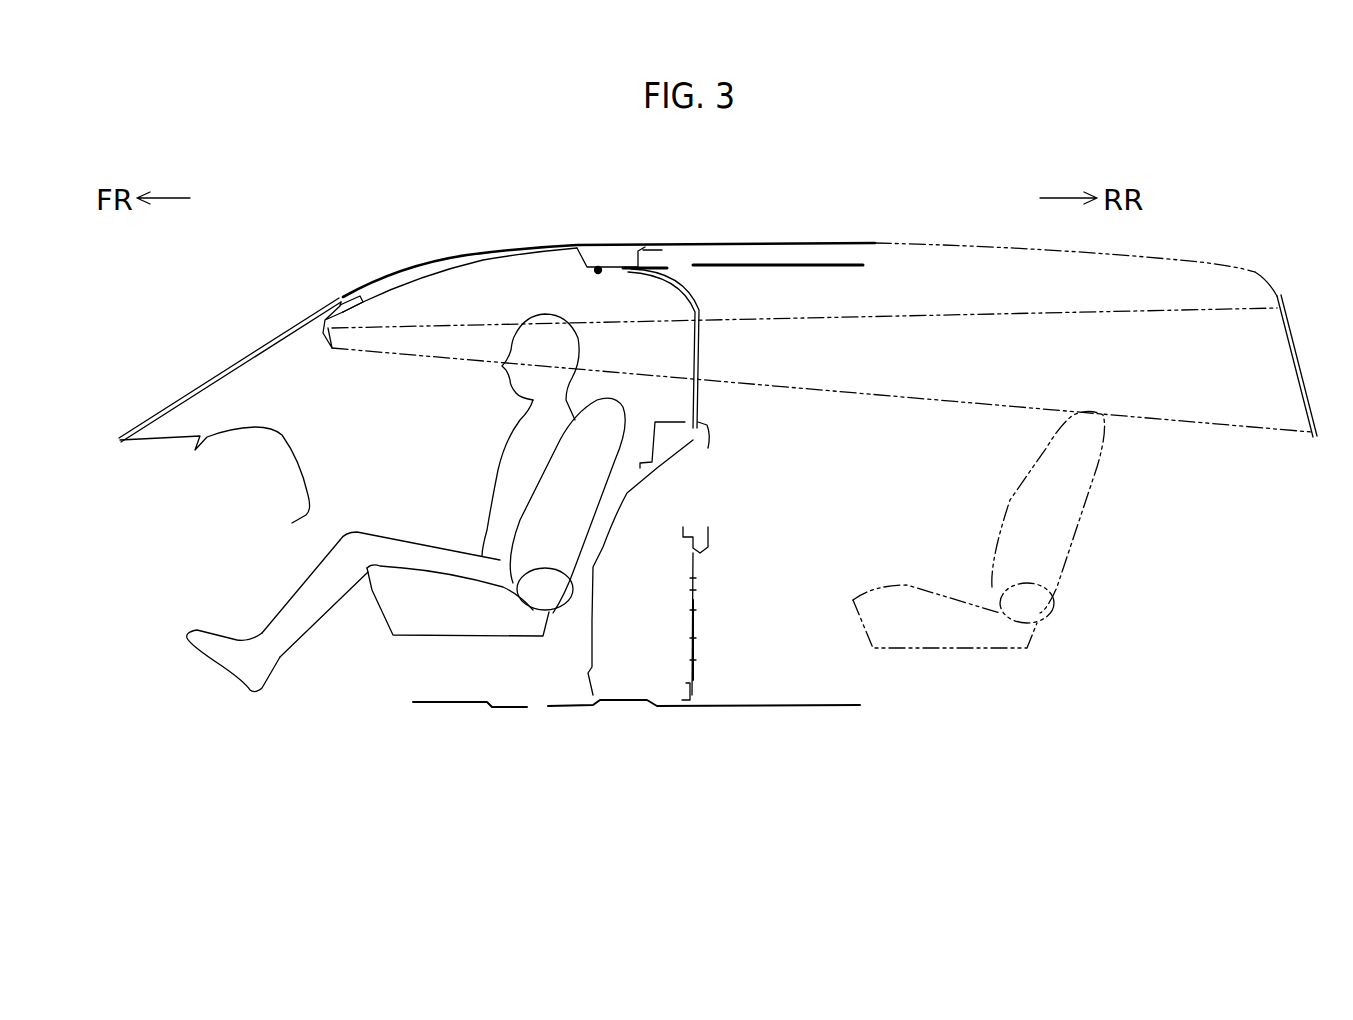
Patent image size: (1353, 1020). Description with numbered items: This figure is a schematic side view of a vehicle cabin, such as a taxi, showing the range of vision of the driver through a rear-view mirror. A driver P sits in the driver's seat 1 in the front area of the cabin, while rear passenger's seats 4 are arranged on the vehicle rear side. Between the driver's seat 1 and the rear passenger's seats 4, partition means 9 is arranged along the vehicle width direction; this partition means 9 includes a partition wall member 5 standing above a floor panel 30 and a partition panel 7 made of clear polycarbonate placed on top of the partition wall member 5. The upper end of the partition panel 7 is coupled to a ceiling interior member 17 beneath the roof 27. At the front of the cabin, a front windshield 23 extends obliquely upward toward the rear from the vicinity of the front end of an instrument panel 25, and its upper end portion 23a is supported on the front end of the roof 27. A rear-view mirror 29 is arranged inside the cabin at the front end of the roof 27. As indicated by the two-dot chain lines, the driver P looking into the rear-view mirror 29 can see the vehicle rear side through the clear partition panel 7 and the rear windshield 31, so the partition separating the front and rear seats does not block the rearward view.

The driver's seat 1 is at (434, 615).
The rear passenger's seats 4 is at (993, 630).
The partition wall member 5 is at (695, 574).
The partition panel 7 is at (717, 305).
The partition means 9 is at (701, 649).
The ceiling interior member 17 is at (820, 267).
The front windshield 23 is at (208, 372).
The upper end portion 23a is at (341, 300).
The instrument panel 25 is at (303, 470).
The roof 27 is at (468, 255).
The rear-view mirror 29 is at (322, 346).
The floor panel 30 is at (830, 704).
The rear windshield 31 is at (1300, 368).
The driver P is at (503, 490).